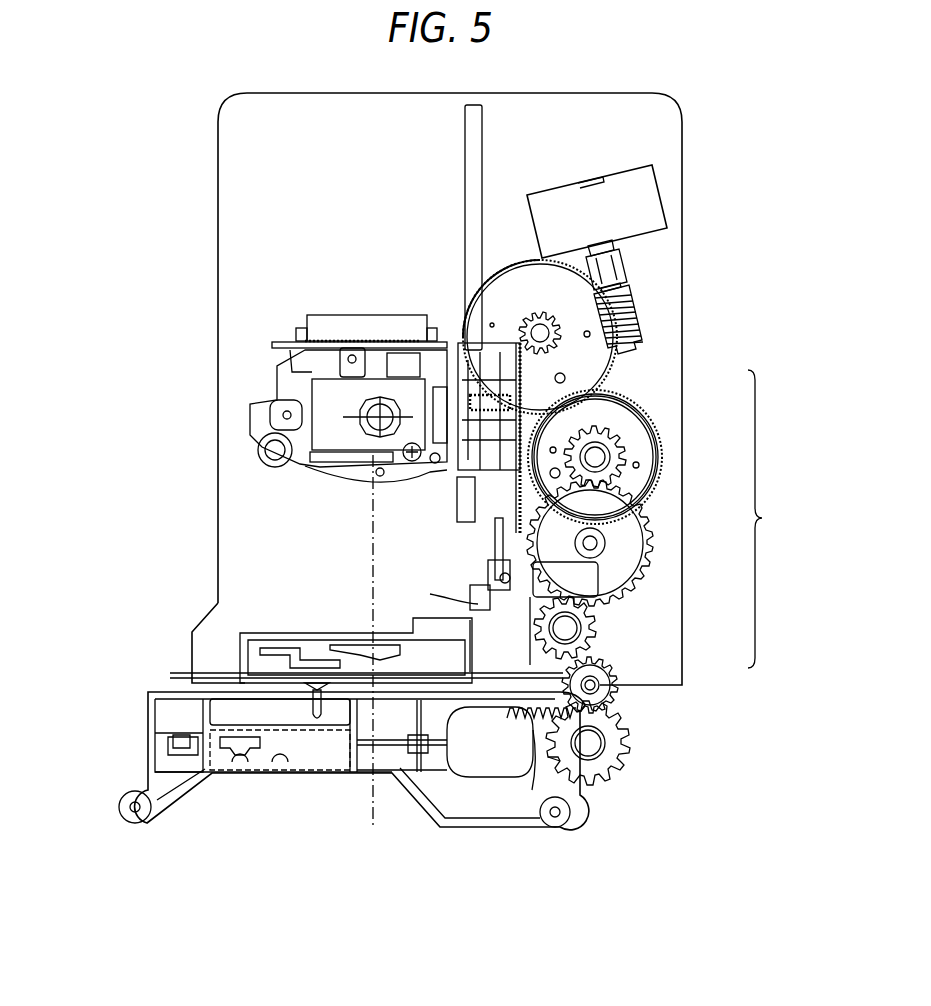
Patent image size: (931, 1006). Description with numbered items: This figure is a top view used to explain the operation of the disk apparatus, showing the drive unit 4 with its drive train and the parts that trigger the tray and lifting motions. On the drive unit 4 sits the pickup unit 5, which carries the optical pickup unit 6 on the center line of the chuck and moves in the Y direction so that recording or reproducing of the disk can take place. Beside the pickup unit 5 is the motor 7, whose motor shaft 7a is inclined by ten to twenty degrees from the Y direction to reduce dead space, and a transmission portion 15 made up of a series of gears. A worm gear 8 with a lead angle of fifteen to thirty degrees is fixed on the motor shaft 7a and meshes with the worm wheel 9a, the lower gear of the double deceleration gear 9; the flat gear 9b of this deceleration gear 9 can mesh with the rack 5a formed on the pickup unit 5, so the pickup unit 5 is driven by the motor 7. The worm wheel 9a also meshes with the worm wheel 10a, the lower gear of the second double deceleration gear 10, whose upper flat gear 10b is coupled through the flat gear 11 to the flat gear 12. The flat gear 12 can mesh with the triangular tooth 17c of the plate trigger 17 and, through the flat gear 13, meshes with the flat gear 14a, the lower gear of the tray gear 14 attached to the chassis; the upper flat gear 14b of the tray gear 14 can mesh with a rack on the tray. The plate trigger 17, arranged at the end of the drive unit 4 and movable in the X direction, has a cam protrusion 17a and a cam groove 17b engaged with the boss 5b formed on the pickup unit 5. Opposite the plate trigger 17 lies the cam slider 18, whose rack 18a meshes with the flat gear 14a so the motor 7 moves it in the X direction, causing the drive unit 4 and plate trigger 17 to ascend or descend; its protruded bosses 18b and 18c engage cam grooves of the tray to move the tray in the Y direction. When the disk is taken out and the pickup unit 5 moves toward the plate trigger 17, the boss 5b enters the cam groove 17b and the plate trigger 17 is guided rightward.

The drive unit 4 is at (683, 148).
The pickup unit 5 is at (326, 320).
The rack 5a is at (510, 477).
The boss 5b is at (488, 577).
The optical pickup unit 6 is at (362, 455).
The motor 7 is at (643, 215).
The motor shaft 7a is at (626, 281).
The worm gear 8 is at (640, 313).
The double deceleration gear 9 is at (613, 372).
The worm wheel 9a is at (512, 262).
The flat gear 9b is at (528, 332).
The double deceleration gear 10 is at (655, 452).
The worm wheel 10a is at (663, 428).
The flat gear 10b is at (620, 472).
The flat gear 11 is at (652, 545).
The flat gear 12 is at (612, 620).
The flat gear 13 is at (623, 677).
The tray gear 14 is at (628, 755).
The flat gear 14a is at (610, 770).
The flat gear 14b is at (628, 733).
The transmission portion 15 is at (766, 519).
The plate trigger 17 is at (248, 658).
The cam protrusion 17a is at (315, 722).
The cam groove 17b is at (475, 578).
The triangular tooth 17c is at (444, 594).
The cam slider 18 is at (467, 812).
The rack 18a is at (532, 787).
The protruded boss 18b is at (565, 815).
The protruded boss 18c is at (142, 818).